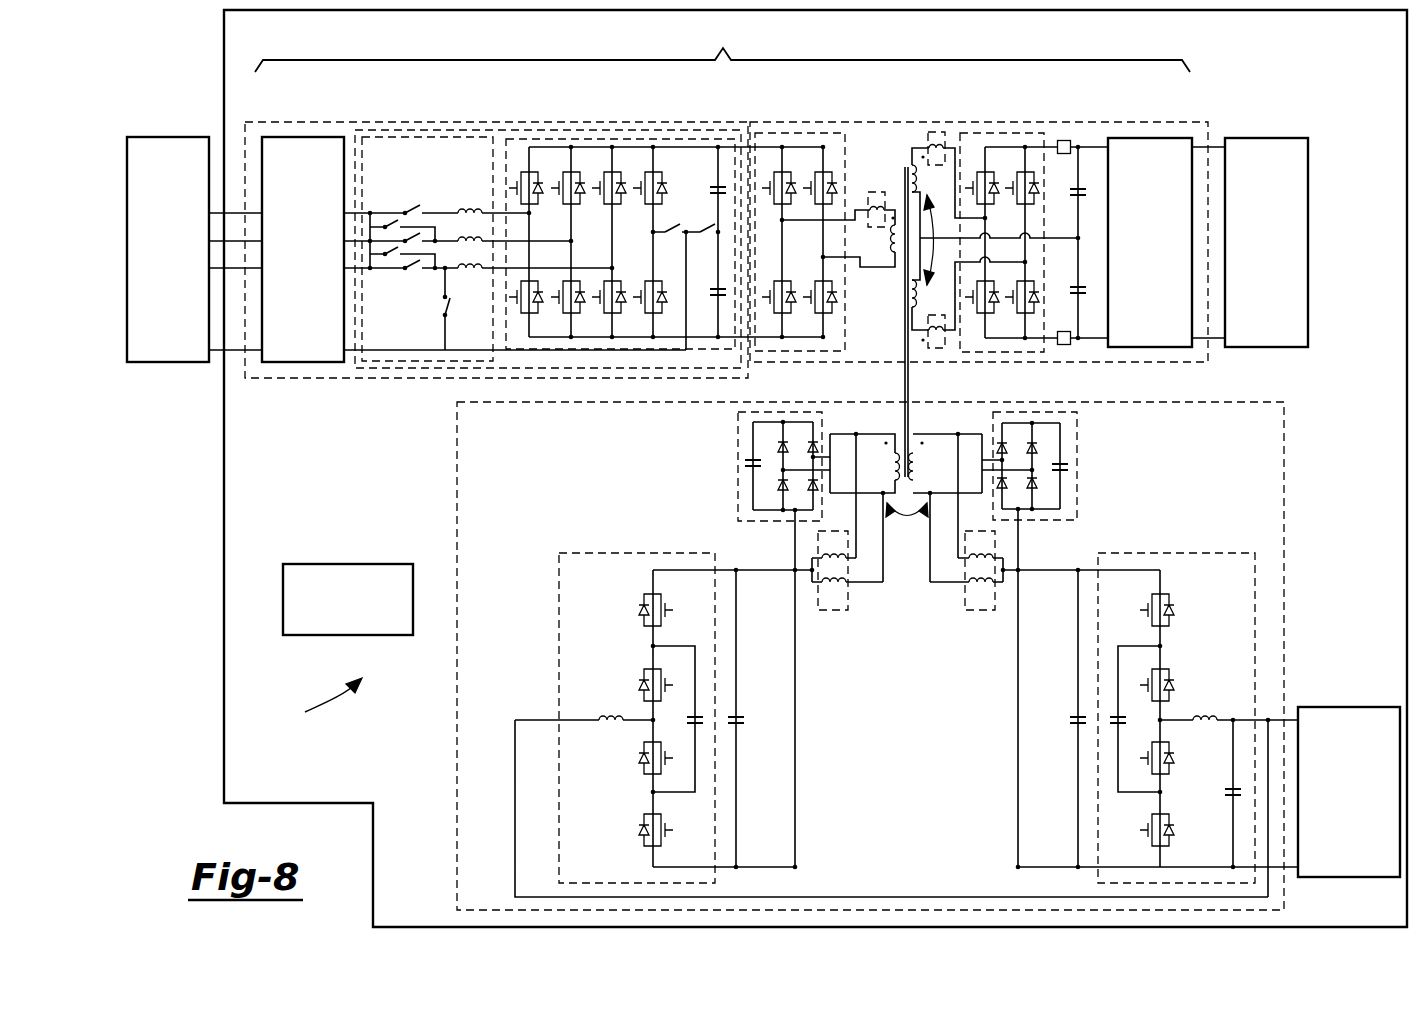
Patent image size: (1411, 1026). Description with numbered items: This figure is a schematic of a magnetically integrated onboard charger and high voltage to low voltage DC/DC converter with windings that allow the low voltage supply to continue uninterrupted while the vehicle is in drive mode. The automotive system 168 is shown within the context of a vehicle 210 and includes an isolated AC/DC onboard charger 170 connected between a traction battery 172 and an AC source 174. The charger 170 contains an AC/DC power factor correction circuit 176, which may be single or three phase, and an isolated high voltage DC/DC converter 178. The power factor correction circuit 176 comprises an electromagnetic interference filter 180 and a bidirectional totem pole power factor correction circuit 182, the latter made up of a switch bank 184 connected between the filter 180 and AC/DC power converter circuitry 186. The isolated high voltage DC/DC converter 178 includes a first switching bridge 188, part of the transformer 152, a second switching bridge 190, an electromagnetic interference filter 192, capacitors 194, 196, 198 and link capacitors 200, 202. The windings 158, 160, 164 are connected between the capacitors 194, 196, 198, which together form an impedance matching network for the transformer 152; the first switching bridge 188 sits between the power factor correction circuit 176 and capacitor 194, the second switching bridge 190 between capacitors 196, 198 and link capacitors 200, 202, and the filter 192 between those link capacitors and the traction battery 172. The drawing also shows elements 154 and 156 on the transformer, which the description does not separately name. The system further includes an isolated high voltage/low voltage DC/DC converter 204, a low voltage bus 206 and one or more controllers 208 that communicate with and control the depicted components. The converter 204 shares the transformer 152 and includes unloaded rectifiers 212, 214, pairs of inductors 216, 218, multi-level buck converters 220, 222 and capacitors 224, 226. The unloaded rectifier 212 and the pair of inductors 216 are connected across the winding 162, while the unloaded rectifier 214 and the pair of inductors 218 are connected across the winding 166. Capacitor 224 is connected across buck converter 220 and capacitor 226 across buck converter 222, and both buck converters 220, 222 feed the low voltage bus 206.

The transformer 152 is at (895, 381).
The transformer core 154 is at (905, 340).
The secondary winding 156 is at (913, 420).
The winding 158 is at (895, 247).
The winding 160 is at (910, 186).
The winding 162 is at (880, 450).
The winding 164 is at (910, 305).
The winding 166 is at (930, 465).
The automotive system 168 is at (314, 702).
The isolated AC/DC onboard charger 170 is at (722, 46).
The traction battery 172 is at (1264, 138).
The AC source 174 is at (162, 363).
The AC/DC power factor correction circuit 176 is at (665, 122).
The isolated high voltage DC/DC converter 178 is at (832, 122).
The electromagnetic interference filter 180 is at (298, 363).
The bidirectional totem pole power factor correction circuit 182 is at (550, 139).
The switch bank 184 is at (428, 137).
The AC/DC power converter circuitry 186 is at (622, 139).
The first switching bridge 188 is at (800, 133).
The second switching bridge 190 is at (1005, 133).
The electromagnetic interference filter 192 is at (1150, 138).
The capacitor 194 is at (877, 192).
The capacitor 196 is at (937, 132).
The capacitor 198 is at (938, 350).
The link capacitor 200 is at (1078, 185).
The link capacitor 202 is at (1078, 297).
The isolated high voltage/low voltage DC/DC converter 204 is at (1284, 458).
The low voltage bus 206 is at (1349, 707).
The controller 208 is at (346, 564).
The vehicle 210 is at (224, 70).
The unloaded rectifier 212 is at (738, 490).
The unloaded rectifier 214 is at (1077, 443).
The pair of inductors 216 is at (835, 610).
The pair of inductors 218 is at (980, 610).
The multi-level buck converter 220 is at (559, 600).
The multi-level buck converter 222 is at (1255, 600).
The capacitor 224 is at (740, 715).
The capacitor 226 is at (1073, 715).